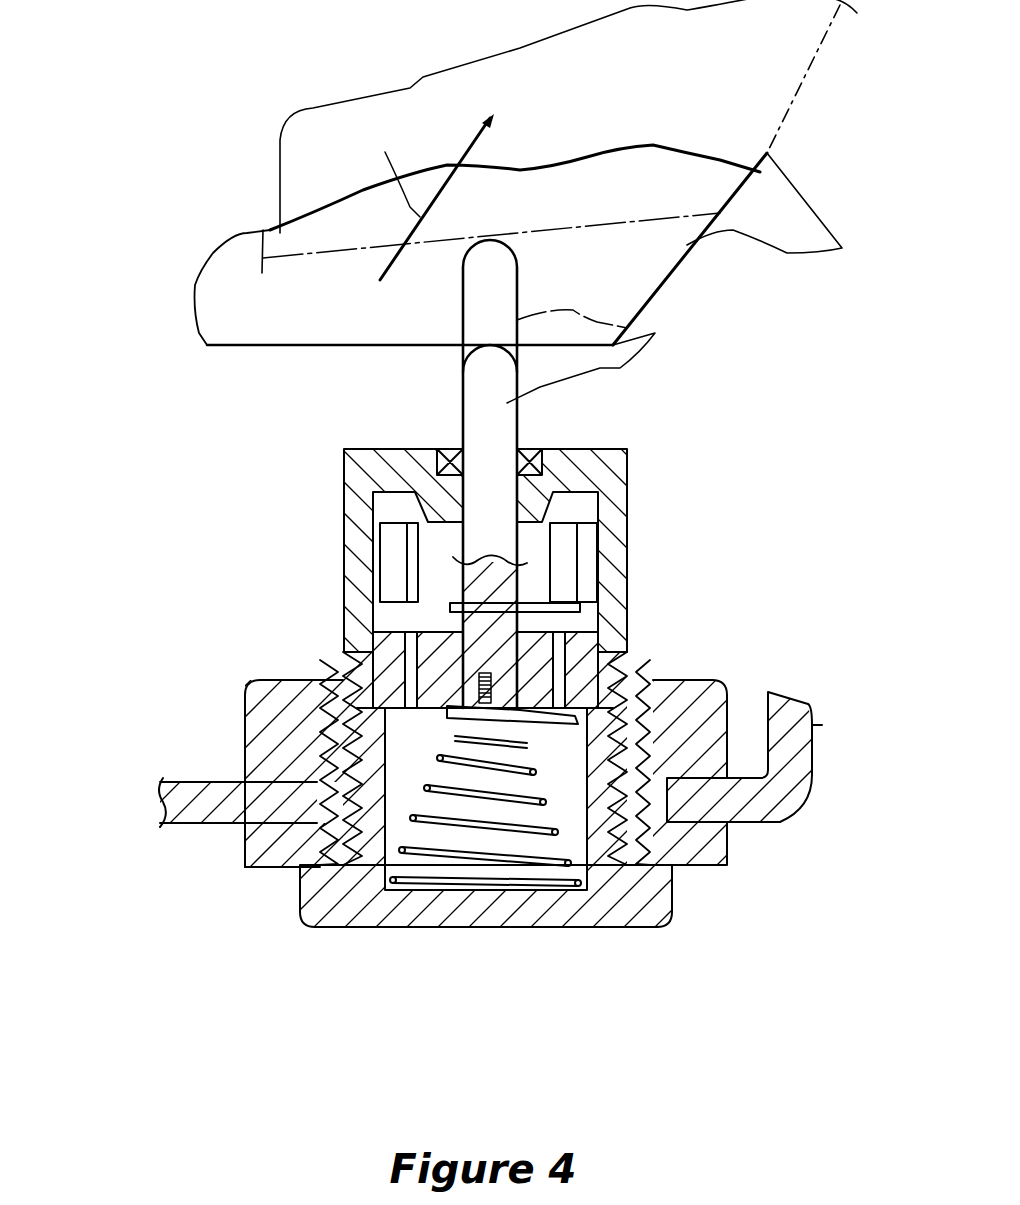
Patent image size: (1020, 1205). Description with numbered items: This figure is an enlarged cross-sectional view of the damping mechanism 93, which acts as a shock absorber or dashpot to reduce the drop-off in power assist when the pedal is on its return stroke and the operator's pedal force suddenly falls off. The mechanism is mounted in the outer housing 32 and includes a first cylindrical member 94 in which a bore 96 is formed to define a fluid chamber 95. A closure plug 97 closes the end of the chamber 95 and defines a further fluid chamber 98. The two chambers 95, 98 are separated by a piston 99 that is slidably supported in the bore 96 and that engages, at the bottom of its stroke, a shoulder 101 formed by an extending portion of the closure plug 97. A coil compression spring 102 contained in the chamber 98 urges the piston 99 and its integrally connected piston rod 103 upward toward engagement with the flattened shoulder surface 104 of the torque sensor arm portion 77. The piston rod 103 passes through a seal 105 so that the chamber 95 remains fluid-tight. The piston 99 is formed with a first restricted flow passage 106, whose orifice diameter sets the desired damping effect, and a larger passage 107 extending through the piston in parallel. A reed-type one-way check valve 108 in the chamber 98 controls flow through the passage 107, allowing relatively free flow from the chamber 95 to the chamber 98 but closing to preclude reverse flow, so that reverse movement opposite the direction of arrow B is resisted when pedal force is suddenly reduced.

The damping mechanism 93 is at (135, 390).
The arm portion 77 is at (542, 172).
The flattened shoulder surface 104 is at (290, 258).
The piston rod 103 is at (655, 333).
The piston 99 is at (427, 523).
The seal 105 is at (530, 450).
The fluid chamber 95 is at (387, 507).
The bore 96 is at (593, 495).
The larger passage 107 is at (560, 648).
The first restricted flow passage 106 is at (420, 640).
The first cylindrical member 94 is at (650, 673).
The closure plug 97 is at (540, 907).
The shoulder 101 is at (327, 680).
The further fluid chamber 98 is at (300, 880).
The one-way check valve 108 is at (657, 863).
The coil compression spring 102 is at (430, 850).
The housing 32 is at (787, 803).